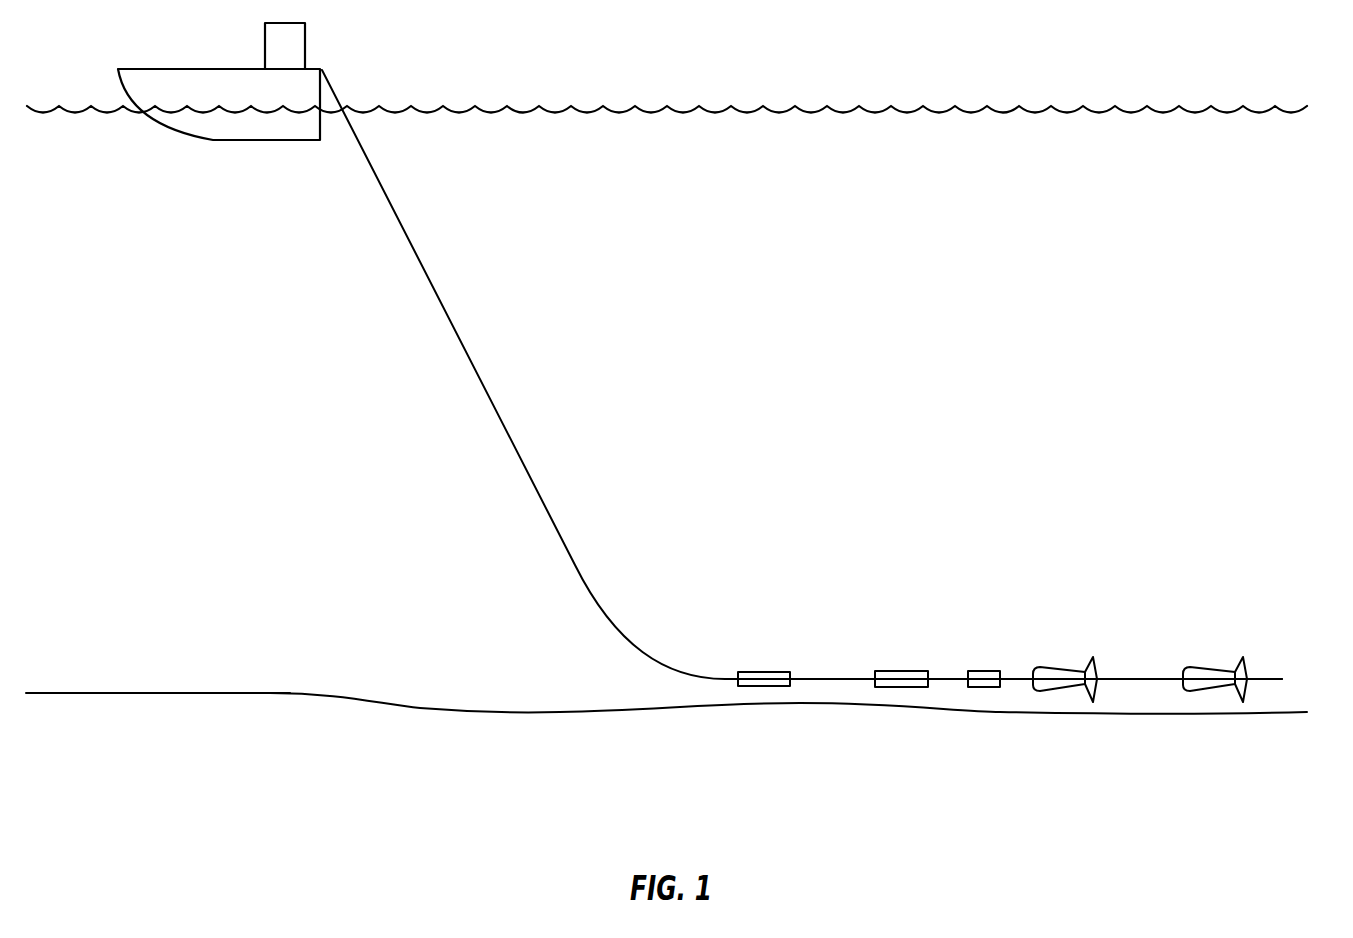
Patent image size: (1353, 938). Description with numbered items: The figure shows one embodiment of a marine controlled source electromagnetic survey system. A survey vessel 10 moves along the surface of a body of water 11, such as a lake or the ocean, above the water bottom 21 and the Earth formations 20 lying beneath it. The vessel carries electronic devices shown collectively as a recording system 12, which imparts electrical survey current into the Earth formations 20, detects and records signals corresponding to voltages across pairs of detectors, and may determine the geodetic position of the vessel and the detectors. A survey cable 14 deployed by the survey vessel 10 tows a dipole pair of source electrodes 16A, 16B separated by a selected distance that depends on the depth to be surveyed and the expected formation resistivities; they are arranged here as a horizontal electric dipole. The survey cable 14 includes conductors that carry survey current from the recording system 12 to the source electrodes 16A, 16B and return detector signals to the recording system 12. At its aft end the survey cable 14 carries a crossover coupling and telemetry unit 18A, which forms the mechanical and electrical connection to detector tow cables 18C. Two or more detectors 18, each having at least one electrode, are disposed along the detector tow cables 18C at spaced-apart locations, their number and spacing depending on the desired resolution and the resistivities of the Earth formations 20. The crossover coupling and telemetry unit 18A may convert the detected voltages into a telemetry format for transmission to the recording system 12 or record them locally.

The survey vessel 10 is at (220, 142).
The body of water 11 is at (732, 207).
The recording system 12 is at (293, 46).
The survey cable 14 is at (390, 215).
The source electrode 16A is at (762, 672).
The source electrode 16B is at (901, 671).
The crossover coupling and telemetry unit 18A is at (984, 671).
The detector 18 is at (1060, 668).
The detector tow cable 18C is at (1022, 679).
The Earth formations 20 is at (560, 759).
The water bottom 21 is at (277, 693).